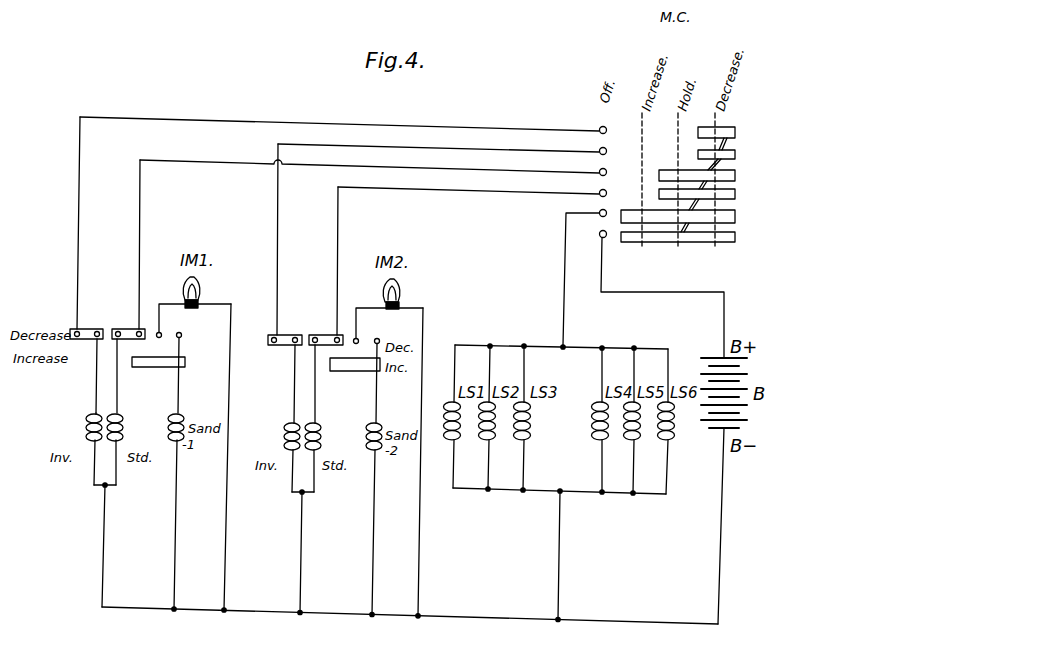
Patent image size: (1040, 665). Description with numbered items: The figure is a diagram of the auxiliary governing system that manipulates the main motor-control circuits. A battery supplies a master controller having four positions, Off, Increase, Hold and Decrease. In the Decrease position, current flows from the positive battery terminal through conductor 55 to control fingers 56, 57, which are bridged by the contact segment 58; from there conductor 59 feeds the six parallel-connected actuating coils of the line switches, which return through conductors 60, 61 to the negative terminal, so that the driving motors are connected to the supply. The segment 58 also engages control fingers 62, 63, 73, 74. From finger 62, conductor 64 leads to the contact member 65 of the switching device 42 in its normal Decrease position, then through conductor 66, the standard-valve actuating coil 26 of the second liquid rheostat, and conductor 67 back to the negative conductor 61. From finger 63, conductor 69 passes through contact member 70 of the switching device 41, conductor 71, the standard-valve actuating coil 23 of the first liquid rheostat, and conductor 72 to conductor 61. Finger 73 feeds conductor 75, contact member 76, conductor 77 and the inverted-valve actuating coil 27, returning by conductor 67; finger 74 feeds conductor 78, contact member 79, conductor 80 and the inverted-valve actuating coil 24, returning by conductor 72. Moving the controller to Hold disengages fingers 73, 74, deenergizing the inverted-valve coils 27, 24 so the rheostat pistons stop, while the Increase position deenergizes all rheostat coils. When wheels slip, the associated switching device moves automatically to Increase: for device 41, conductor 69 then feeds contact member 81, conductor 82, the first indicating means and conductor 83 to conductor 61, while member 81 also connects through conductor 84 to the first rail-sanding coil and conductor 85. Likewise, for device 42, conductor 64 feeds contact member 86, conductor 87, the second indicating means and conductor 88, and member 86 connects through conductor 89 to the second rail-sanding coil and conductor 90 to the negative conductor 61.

The actuating coil 23 is at (123, 427).
The actuating coil 24 is at (86, 427).
The actuating coil 26 is at (321, 440).
The actuating coil 27 is at (284, 434).
The switching device 41 is at (121, 321).
The switching device 42 is at (305, 328).
The conductor 55 is at (695, 292).
The control finger 56 is at (600, 236).
The control finger 57 is at (600, 215).
The contact segment 58 is at (736, 217).
The conductor 59 is at (565, 285).
The conductor 60 is at (559, 559).
The negative conductor 61 is at (332, 618).
The control finger 62 is at (598, 192).
The control finger 63 is at (598, 171).
The conductor 64 is at (531, 190).
The contact member 65 is at (330, 344).
The conductor 66 is at (316, 410).
The conductor 67 is at (302, 556).
The conductor 69 is at (532, 169).
The contact member 70 is at (133, 338).
The conductor 71 is at (117, 402).
The conductor 72 is at (104, 519).
The control finger 73 is at (598, 150).
The control finger 74 is at (598, 129).
The conductor 75 is at (532, 149).
The contact member 76 is at (288, 343).
The conductor 77 is at (293, 393).
The conductor 78 is at (532, 128).
The contact member 79 is at (72, 329).
The conductor 80 is at (96, 388).
The contact member 81 is at (153, 363).
The conductor 82 is at (195, 304).
The conductor 83 is at (230, 345).
The conductor 84 is at (178, 388).
The conductor 85 is at (172, 550).
The contact member 86 is at (353, 367).
The conductor 87 is at (357, 322).
The conductor 88 is at (424, 322).
The conductor 89 is at (375, 403).
The conductor 90 is at (372, 503).